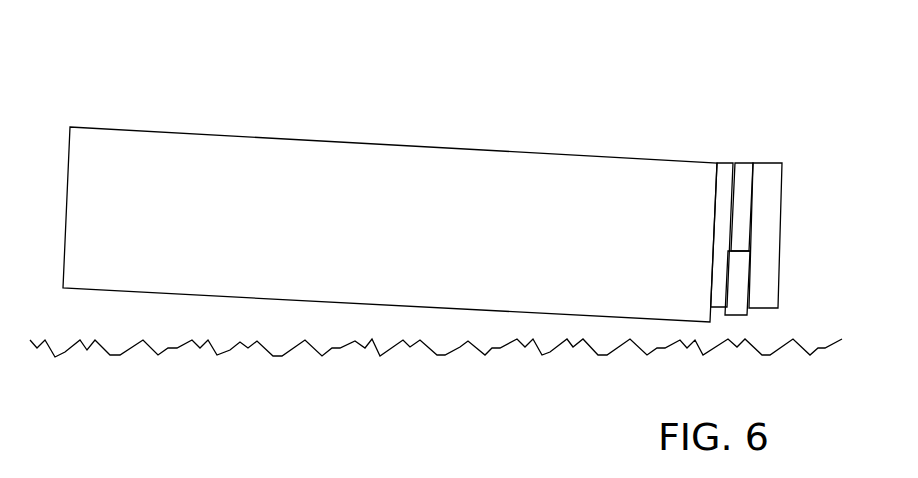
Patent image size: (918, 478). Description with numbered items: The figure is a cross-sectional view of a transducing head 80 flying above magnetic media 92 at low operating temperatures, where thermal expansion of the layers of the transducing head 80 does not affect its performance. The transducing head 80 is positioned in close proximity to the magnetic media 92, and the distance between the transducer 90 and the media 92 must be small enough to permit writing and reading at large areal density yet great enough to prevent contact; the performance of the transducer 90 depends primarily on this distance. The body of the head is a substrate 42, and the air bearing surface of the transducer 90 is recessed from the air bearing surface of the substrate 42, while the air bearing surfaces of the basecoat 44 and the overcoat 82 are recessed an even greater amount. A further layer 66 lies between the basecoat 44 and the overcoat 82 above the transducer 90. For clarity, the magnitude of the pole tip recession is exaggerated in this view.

The substrate 42 is at (420, 179).
The basecoat 44 is at (728, 185).
The second layer 66 is at (744, 207).
The transducer 90 is at (737, 297).
The overcoat 82 is at (758, 258).
The transducing head 80 is at (758, 82).
The magnetic media 92 is at (825, 353).